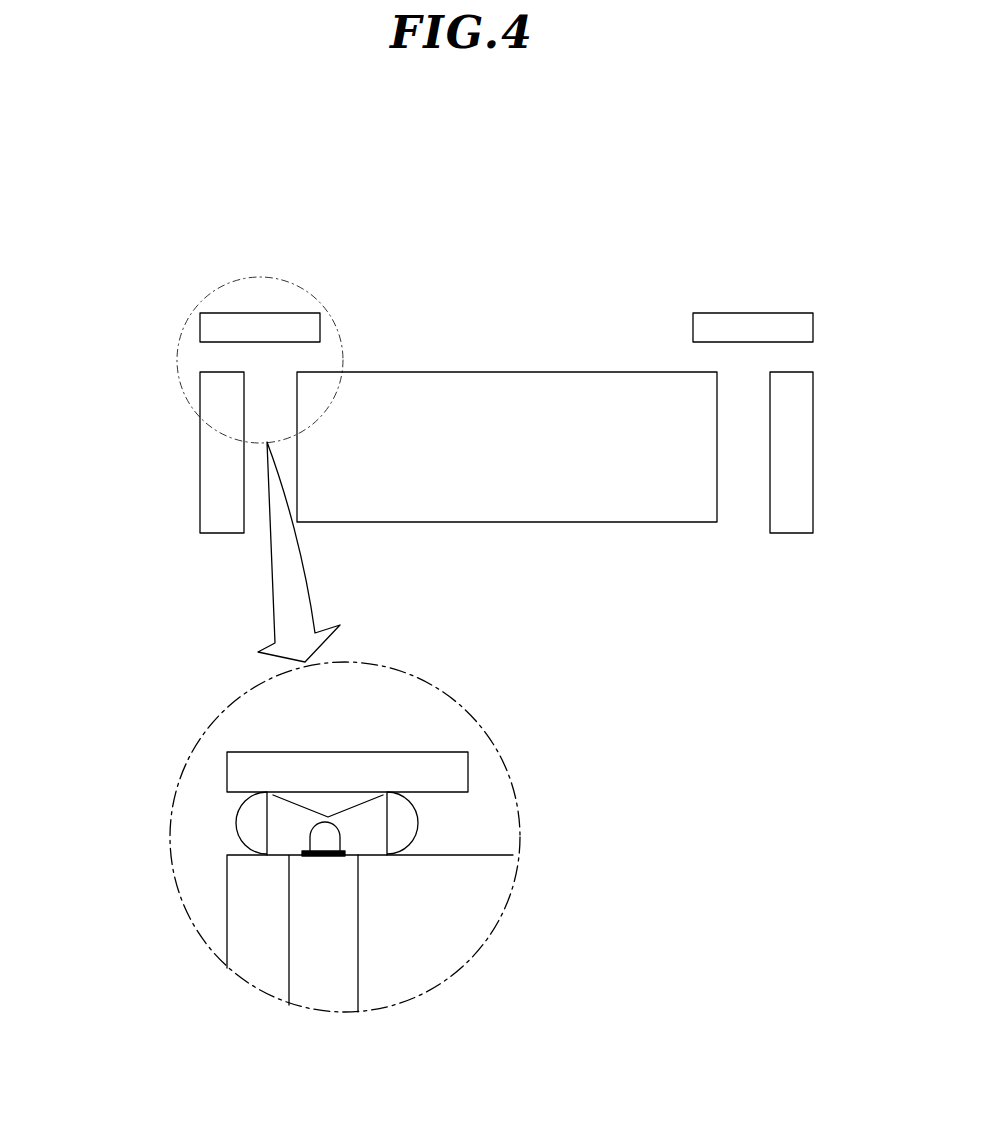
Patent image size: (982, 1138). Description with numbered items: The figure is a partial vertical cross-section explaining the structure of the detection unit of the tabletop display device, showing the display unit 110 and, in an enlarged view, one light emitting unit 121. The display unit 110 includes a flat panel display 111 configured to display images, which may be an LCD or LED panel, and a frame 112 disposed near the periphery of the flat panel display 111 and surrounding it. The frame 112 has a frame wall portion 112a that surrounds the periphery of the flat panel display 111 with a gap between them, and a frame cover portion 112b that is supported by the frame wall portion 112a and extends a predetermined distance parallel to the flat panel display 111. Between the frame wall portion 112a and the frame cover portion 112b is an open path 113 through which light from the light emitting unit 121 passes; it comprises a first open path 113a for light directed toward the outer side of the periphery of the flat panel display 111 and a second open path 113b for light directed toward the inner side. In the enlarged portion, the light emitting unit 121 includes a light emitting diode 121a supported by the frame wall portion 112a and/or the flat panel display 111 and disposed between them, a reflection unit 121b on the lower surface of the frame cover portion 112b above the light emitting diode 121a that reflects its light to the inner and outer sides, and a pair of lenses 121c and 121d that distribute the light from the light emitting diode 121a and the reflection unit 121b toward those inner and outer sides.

The display unit 110 is at (768, 190).
The flat panel display 111 is at (512, 395).
The frame 112 is at (422, 247).
The frame wall portion 112a is at (231, 379).
The frame cover portion 112b is at (250, 323).
The open path 113 is at (848, 245).
The first open path 113a is at (810, 358).
The second open path 113b is at (698, 358).
The light emitting unit 121 is at (82, 753).
The light emitting diode 121a is at (322, 838).
The reflection unit 121b is at (320, 798).
The lens 121c is at (248, 822).
The lens 121d is at (397, 838).